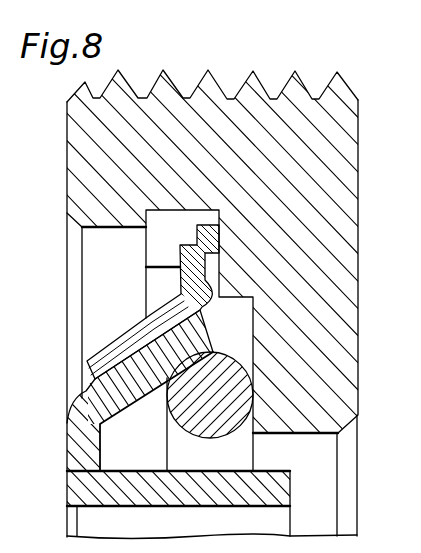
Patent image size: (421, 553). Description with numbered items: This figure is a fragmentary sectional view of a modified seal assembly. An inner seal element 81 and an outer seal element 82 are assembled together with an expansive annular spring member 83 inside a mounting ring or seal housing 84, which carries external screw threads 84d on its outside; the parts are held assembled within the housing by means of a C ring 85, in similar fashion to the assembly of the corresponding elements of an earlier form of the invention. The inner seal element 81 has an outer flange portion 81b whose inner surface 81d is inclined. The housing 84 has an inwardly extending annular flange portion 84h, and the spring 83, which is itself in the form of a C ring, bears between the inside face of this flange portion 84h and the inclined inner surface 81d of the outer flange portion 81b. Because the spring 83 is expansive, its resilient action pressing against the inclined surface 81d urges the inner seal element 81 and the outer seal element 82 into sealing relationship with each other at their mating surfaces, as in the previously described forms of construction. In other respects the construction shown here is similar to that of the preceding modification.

The inner seal element 81 is at (75, 460).
The outer flange portion 81b is at (123, 383).
The inclined inner surface 81d is at (147, 391).
The outer seal element 82 is at (138, 324).
The expansive annular spring member 83 is at (240, 395).
The mounting ring or seal housing 84 is at (86, 155).
The external screw threads 84d is at (222, 80).
The inwardly extending annular flange portion 84h is at (335, 352).
The C ring 85 is at (157, 247).